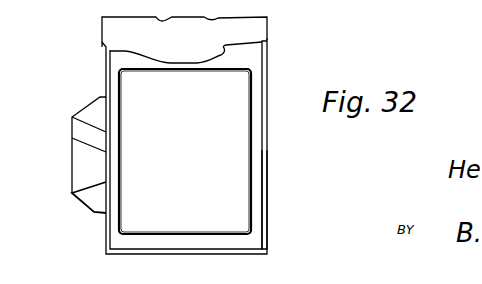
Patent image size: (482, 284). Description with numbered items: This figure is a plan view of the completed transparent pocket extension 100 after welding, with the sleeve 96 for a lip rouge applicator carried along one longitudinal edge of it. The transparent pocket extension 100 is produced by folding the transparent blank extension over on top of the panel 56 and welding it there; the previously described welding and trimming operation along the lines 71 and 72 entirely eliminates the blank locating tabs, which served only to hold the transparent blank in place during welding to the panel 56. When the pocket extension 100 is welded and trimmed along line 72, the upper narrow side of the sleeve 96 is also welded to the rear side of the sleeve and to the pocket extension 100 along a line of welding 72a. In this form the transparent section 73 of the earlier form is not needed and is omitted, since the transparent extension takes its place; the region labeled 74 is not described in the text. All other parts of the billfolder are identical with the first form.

The panel 56 is at (112, 28).
The trimming line 72 is at (106, 78).
The line of welding 72a is at (72, 133).
The sleeve 96 is at (80, 158).
The liner fold 74 is at (220, 57).
The transparent section 73 is at (237, 90).
The transparent pocket extension 100 is at (227, 117).
The trimming line 71 is at (266, 181).